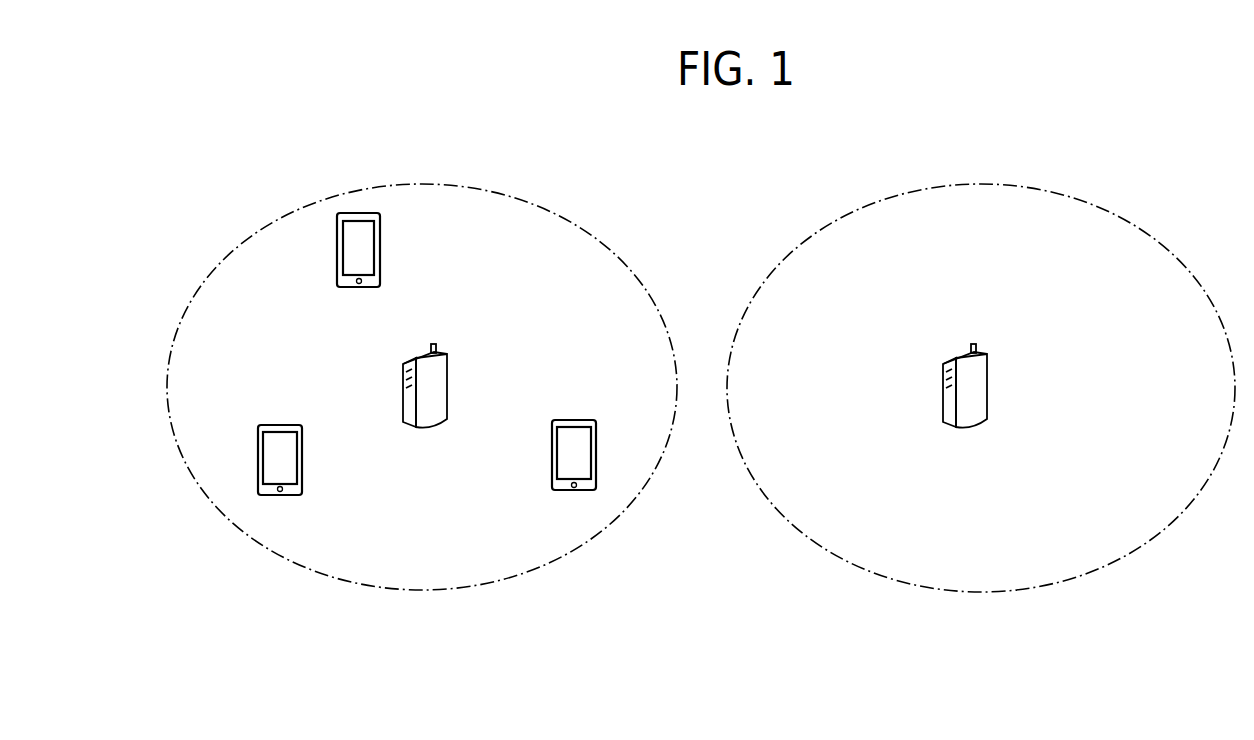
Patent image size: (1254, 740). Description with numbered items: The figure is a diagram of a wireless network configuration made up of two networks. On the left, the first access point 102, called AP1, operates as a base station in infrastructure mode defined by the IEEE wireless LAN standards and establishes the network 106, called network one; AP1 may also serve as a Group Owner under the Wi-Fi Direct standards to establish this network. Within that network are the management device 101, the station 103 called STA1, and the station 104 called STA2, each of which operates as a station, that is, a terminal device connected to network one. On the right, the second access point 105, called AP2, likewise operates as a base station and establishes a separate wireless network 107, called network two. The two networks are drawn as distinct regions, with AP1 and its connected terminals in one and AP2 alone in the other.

The management device 101 is at (572, 419).
The first access point 102 is at (448, 385).
The station 103 is at (279, 423).
The station 104 is at (381, 243).
The second access point 105 is at (989, 385).
The network 106 is at (523, 574).
The wireless network 107 is at (1161, 531).